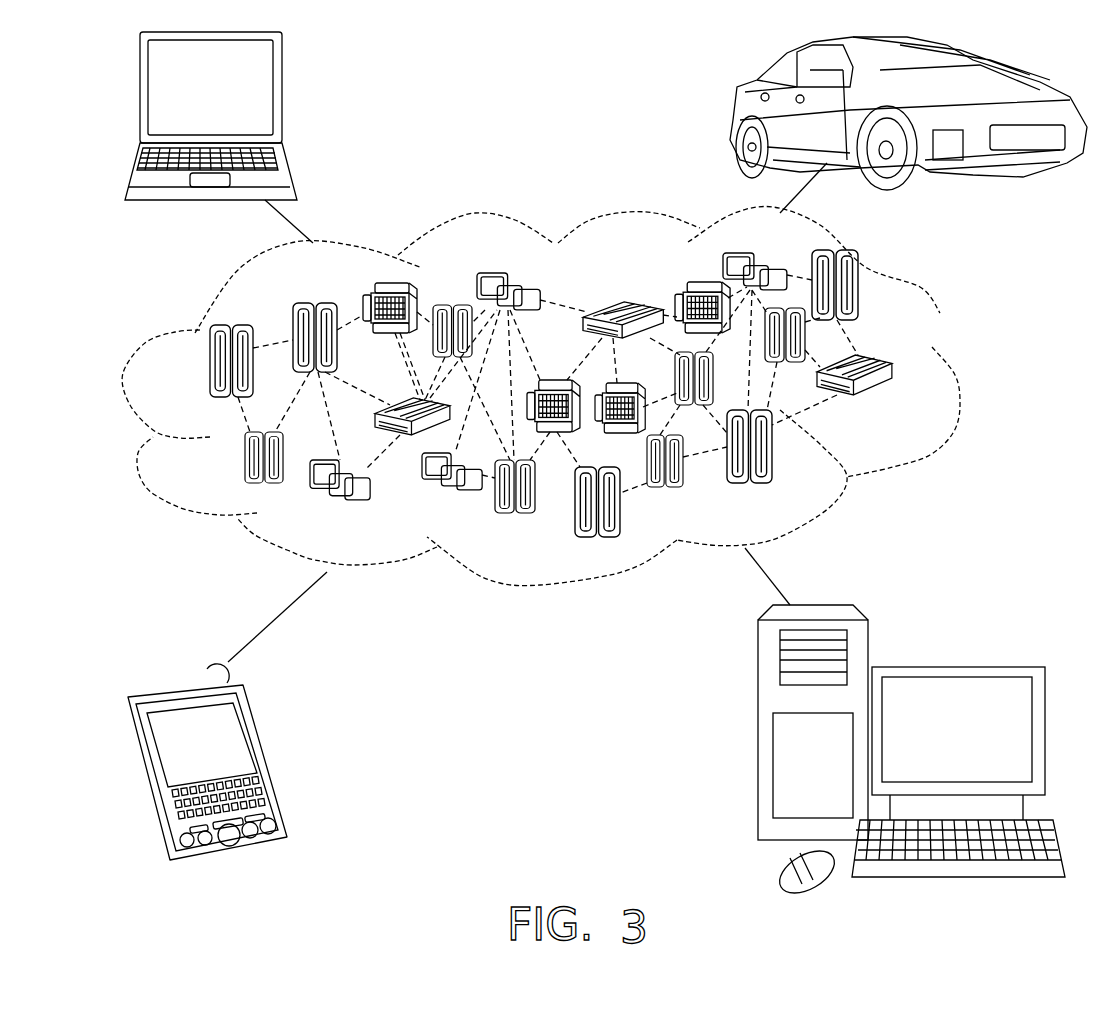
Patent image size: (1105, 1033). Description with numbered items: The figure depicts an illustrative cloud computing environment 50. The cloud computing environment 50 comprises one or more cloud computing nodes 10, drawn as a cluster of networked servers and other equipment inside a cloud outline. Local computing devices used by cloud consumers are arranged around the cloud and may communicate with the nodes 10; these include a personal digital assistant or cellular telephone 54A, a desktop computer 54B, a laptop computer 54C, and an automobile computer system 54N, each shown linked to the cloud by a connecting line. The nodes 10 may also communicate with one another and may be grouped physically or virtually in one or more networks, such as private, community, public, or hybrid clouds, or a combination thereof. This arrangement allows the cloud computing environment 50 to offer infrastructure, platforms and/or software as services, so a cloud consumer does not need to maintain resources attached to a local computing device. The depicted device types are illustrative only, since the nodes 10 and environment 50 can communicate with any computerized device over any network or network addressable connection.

The cloud computing nodes 10 is at (568, 395).
The cloud computing environment 50 is at (957, 373).
The personal digital assistant or cellular telephone 54A is at (270, 757).
The desktop computer 54B is at (953, 662).
The laptop computer 54C is at (282, 92).
The automobile computer system 54N is at (730, 113).